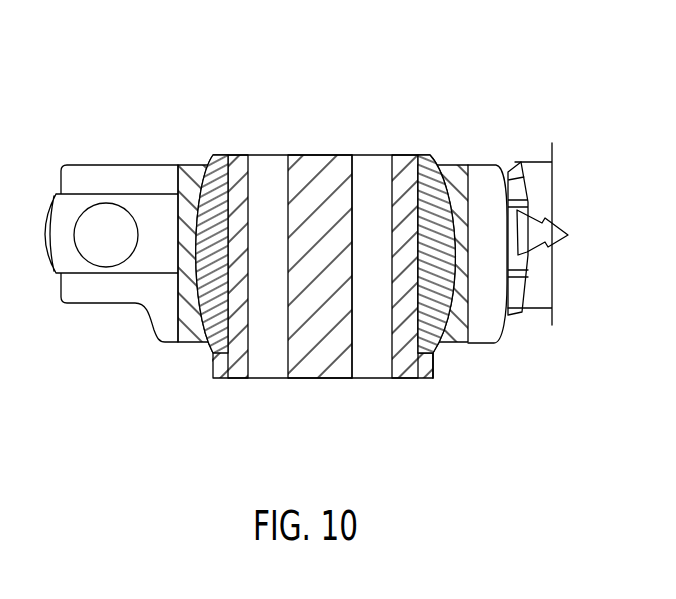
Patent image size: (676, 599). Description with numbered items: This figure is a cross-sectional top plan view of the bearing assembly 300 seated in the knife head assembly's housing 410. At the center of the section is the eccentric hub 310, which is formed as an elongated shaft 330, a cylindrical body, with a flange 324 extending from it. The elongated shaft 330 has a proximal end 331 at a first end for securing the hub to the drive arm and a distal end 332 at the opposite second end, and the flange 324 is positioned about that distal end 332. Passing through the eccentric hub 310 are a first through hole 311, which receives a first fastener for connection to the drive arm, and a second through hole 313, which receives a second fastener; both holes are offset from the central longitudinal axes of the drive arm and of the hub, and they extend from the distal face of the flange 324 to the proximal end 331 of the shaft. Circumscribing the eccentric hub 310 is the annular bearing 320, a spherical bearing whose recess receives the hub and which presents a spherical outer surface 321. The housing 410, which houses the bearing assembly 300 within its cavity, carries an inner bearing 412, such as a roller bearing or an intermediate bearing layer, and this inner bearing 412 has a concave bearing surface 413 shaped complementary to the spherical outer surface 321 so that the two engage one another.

The bearing assembly 300 is at (432, 150).
The eccentric hub 310 is at (310, 380).
The first through hole 311 is at (347, 360).
The second through hole 313 is at (240, 363).
The annular bearing 320 is at (212, 353).
The spherical outer surface 321 is at (452, 207).
The flange 324 is at (433, 370).
The elongated shaft 330 is at (237, 183).
The proximal end 331 is at (413, 150).
The distal end 332 is at (413, 382).
The housing 410 is at (485, 160).
The inner bearing 412 is at (463, 340).
The concave bearing surface 413 is at (440, 300).